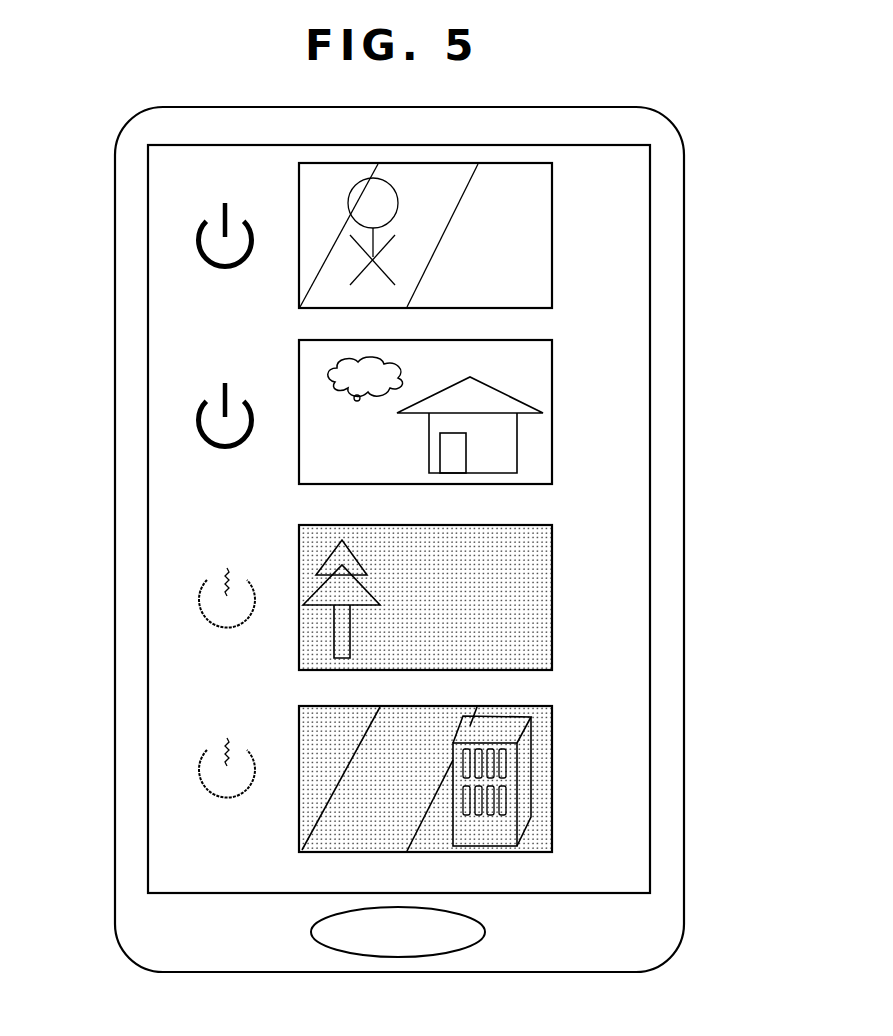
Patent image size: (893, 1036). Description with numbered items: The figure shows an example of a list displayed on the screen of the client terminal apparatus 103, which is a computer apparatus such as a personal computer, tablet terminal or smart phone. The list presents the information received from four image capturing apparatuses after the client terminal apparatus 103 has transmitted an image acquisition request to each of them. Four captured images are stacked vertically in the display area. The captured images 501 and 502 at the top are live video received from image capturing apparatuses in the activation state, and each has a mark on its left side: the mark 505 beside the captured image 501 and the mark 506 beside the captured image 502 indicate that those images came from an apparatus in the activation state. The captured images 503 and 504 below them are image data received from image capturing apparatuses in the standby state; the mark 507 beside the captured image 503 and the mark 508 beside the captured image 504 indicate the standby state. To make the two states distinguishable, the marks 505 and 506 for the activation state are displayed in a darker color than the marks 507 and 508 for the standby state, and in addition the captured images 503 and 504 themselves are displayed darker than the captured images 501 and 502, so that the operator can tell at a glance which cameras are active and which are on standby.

The client terminal apparatus 103 is at (115, 159).
The captured image 501 is at (552, 200).
The captured image 502 is at (553, 379).
The captured image 503 is at (553, 565).
The captured image 504 is at (553, 745).
The mark 505 is at (195, 238).
The mark 506 is at (195, 413).
The mark 507 is at (197, 594).
The mark 508 is at (197, 764).